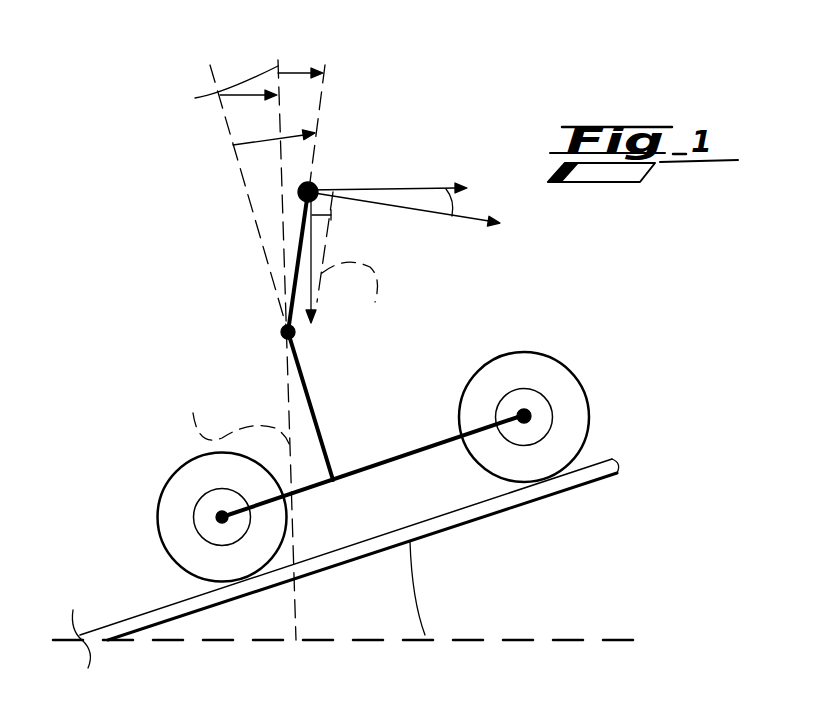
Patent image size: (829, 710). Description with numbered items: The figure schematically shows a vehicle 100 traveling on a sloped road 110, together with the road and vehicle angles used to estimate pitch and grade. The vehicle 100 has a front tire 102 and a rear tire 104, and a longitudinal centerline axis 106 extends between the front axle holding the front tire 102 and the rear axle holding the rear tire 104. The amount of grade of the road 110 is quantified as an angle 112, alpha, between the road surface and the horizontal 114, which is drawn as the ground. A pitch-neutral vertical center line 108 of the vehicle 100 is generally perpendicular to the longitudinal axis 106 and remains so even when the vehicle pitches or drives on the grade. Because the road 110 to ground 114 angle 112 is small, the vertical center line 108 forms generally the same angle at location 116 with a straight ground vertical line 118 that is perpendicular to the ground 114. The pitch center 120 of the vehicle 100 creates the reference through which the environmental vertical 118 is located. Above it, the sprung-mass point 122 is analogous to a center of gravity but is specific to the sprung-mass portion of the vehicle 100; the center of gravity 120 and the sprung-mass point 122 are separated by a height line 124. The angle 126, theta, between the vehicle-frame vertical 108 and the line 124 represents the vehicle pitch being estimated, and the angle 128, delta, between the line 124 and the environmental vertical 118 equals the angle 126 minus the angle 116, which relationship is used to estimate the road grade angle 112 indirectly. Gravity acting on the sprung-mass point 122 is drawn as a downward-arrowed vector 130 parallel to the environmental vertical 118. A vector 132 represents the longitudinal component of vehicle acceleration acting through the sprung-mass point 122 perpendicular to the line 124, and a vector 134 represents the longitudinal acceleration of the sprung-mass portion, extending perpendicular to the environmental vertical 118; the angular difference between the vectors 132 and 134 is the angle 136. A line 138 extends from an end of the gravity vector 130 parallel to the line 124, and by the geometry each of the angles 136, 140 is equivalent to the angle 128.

The vehicle 100 is at (367, 323).
The front tire 102 is at (160, 543).
The rear tire 104 is at (563, 359).
The longitudinal centerline axis 106 is at (312, 495).
The pitch-neutral vertical center line 108 is at (228, 122).
The road 110 is at (599, 458).
The grade angle 112 is at (423, 576).
The horizontal 114 is at (570, 633).
The second angle 116 is at (246, 96).
The ground vertical line 118 is at (197, 97).
The pitch center 120 is at (285, 337).
The sprung-mass point 122 is at (315, 183).
The height line 124 is at (296, 245).
The vehicle pitch angle 126 is at (259, 137).
The angle delta 128 is at (299, 78).
The gravity vector 130 is at (293, 337).
The longitudinal acceleration vector 132 is at (385, 187).
The longitudinal mass-sprung acceleration vector 134 is at (467, 229).
The angle 136 is at (451, 215).
The line 138 is at (358, 301).
The angle 140 is at (314, 216).